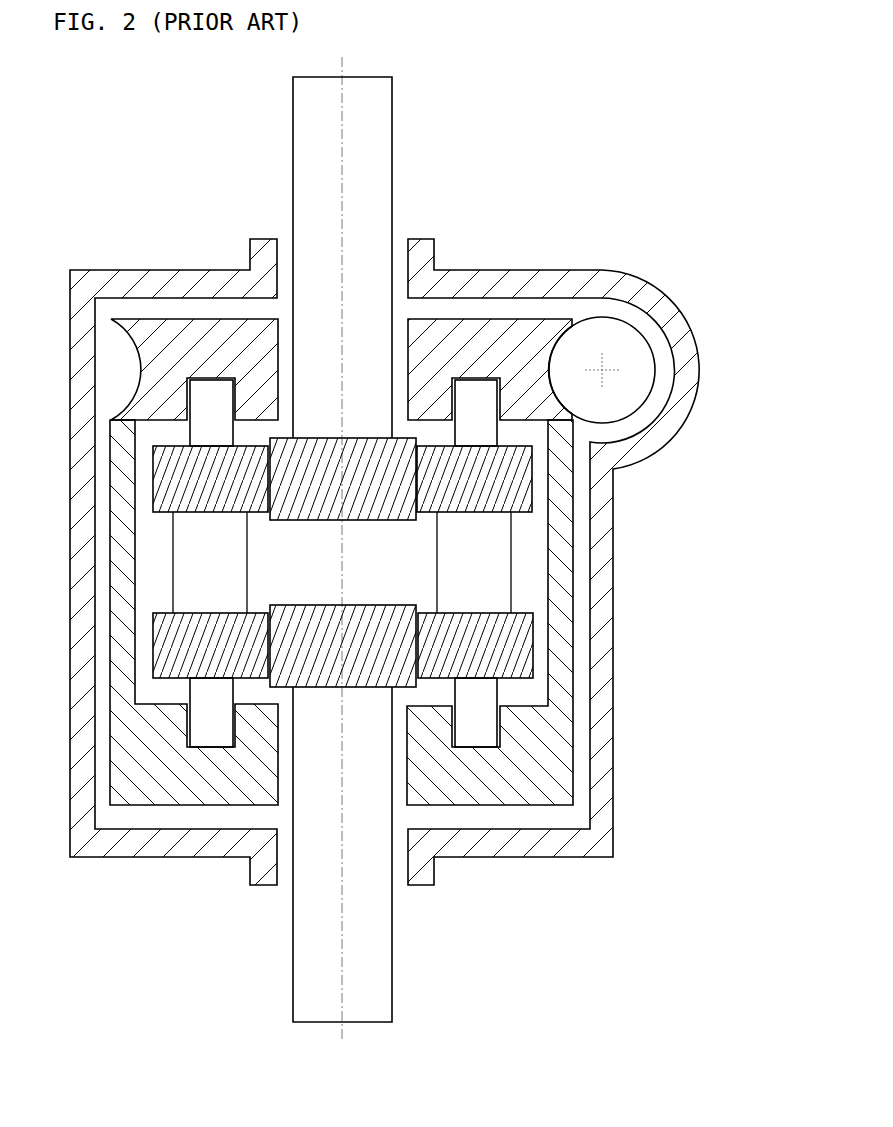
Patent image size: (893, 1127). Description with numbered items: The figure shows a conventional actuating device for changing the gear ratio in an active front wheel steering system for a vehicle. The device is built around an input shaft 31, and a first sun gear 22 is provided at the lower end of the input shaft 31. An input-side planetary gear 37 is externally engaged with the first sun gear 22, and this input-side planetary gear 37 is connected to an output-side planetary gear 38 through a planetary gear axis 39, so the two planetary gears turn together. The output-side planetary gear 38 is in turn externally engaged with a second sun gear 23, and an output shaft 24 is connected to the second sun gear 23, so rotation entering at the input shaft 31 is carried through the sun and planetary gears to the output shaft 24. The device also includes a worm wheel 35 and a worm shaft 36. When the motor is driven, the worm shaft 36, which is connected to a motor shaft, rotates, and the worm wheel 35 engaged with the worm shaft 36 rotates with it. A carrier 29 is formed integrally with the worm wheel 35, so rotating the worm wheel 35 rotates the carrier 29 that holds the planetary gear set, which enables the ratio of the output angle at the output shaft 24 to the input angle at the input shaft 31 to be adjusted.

The input shaft 31 is at (370, 93).
The output shaft 24 is at (365, 978).
The first sun gear 22 is at (305, 521).
The second sun gear 23 is at (386, 605).
The worm wheel 35 is at (517, 333).
The worm shaft 36 is at (628, 347).
The input-side planetary gear 37 is at (523, 482).
The output-side planetary gear 38 is at (523, 660).
The planetary gear axis 39 is at (502, 575).
The carrier 29 is at (543, 780).